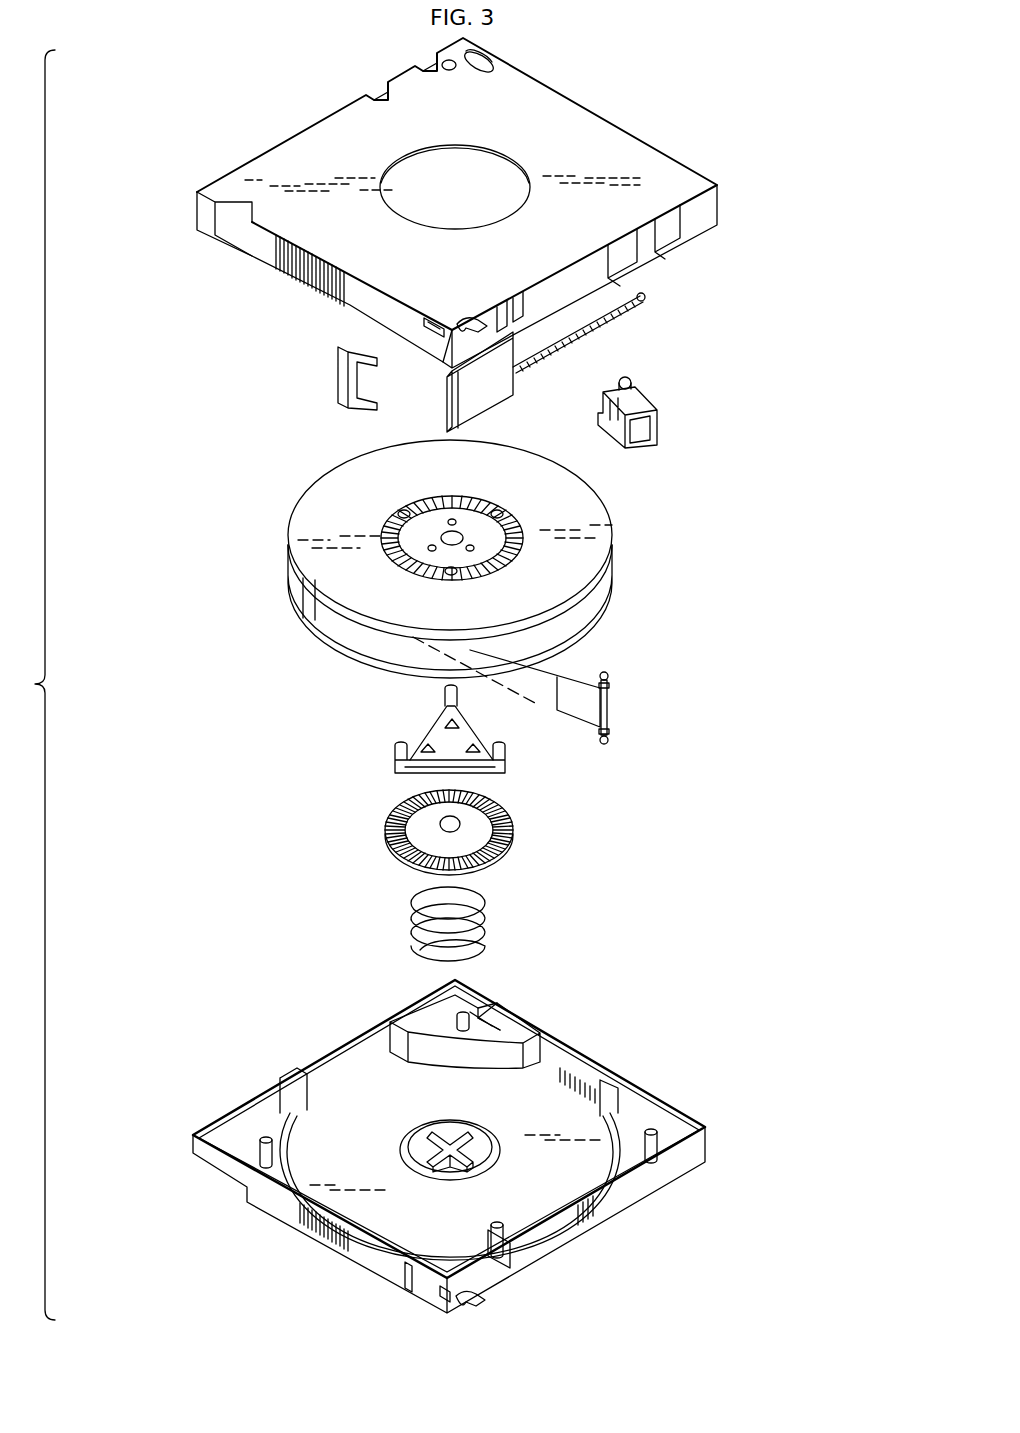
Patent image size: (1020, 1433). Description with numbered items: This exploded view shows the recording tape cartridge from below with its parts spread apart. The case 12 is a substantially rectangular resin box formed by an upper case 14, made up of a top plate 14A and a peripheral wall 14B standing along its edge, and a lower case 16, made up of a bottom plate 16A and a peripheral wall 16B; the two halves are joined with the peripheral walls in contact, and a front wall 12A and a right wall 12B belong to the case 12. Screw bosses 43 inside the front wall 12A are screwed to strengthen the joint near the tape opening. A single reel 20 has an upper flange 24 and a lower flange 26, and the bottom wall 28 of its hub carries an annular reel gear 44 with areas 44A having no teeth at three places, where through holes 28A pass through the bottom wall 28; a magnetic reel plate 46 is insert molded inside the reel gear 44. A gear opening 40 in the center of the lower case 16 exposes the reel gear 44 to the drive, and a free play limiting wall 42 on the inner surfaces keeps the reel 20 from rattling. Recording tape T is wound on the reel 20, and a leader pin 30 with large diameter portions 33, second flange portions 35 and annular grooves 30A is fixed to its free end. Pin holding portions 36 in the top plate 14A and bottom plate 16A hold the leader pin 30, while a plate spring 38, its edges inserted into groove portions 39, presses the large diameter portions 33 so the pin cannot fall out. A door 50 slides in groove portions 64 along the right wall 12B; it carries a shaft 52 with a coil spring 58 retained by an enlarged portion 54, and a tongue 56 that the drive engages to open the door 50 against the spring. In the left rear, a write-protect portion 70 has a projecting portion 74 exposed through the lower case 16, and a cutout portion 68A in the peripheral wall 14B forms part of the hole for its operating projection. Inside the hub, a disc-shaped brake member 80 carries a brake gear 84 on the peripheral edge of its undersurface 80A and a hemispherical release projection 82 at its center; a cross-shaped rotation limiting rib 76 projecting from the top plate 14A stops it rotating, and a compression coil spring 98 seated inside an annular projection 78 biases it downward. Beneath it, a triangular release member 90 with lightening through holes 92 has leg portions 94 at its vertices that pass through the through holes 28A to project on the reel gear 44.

The case 12 is at (444, 679).
The front wall 12A is at (199, 213).
The right wall 12B is at (694, 235).
The upper case 14 is at (480, 1137).
The top plate 14A is at (449, 1120).
The peripheral wall 14B is at (267, 1200).
The lower case 16 is at (444, 203).
The bottom plate 16A is at (457, 184).
The peripheral wall 16B is at (439, 276).
The reel 20 is at (460, 547).
The upper flange 24 is at (614, 600).
The lower flange 26 is at (578, 495).
The bottom wall 28 is at (439, 514).
The through holes 28A is at (400, 510).
The leader pin 30 is at (646, 708).
The annular grooves 30A is at (611, 688).
The large diameter portions 33 is at (611, 683).
The second flange portions 35 is at (604, 672).
The pin holding portions 36 is at (484, 318).
The plate spring 38 is at (340, 382).
The groove portions 39 is at (430, 315).
The gear opening 40 is at (500, 148).
The free play limiting wall 42 is at (425, 1048).
The screw bosses 43 is at (402, 1272).
The reel gear 44 is at (512, 520).
The areas with no teeth 44A is at (456, 576).
The reel plate 46 is at (416, 540).
The door 50 is at (444, 388).
The shaft 52 is at (613, 332).
The enlarged portion 54 is at (646, 298).
The tongue 56 is at (437, 398).
The coil spring 58 is at (626, 317).
The groove portions 64 is at (514, 1280).
The cutout portion 68A is at (480, 1008).
The write-protect portion 70 is at (659, 405).
The projecting portion 74 is at (633, 385).
The rotation limiting rib 76 is at (452, 1132).
The annular projection 78 is at (437, 1183).
The brake member 80 is at (465, 836).
The undersurface 80A is at (480, 825).
The release projection 82 is at (443, 828).
The brake gear 84 is at (392, 815).
The release member 90 is at (424, 729).
The through holes 92 is at (468, 745).
The leg portions 94 is at (394, 756).
The compression coil spring 98 is at (490, 906).
The recording tape T is at (579, 702).